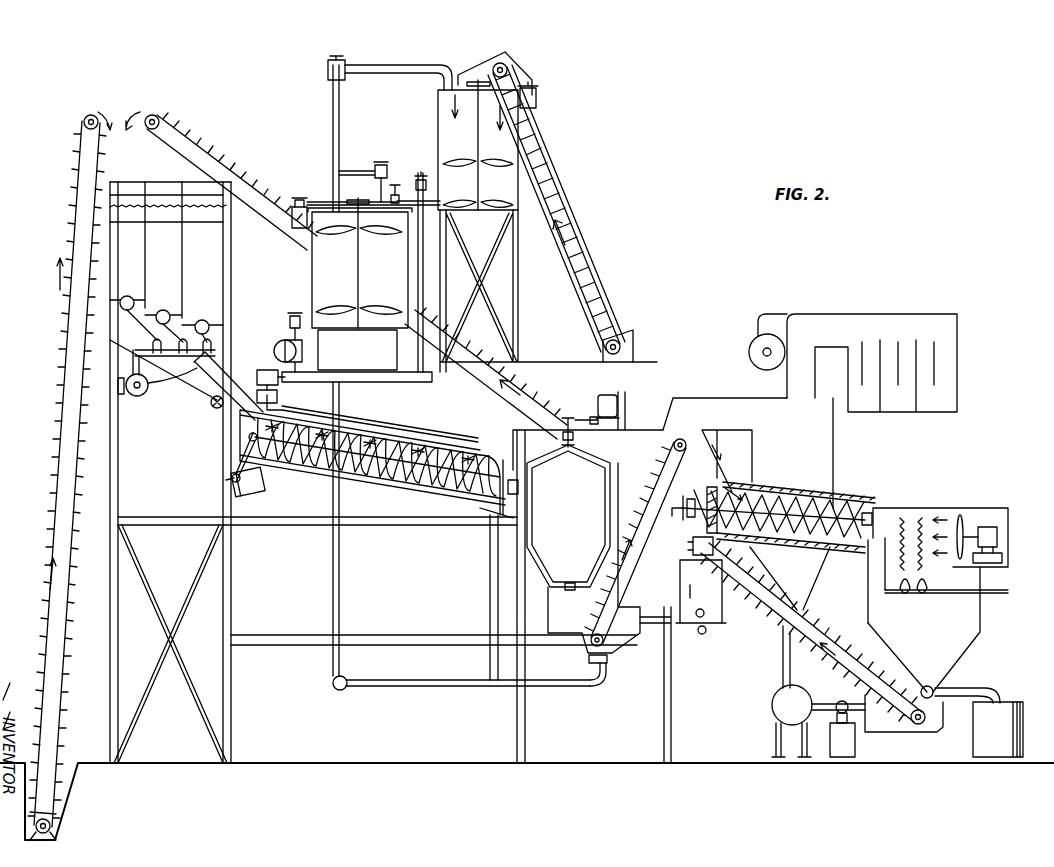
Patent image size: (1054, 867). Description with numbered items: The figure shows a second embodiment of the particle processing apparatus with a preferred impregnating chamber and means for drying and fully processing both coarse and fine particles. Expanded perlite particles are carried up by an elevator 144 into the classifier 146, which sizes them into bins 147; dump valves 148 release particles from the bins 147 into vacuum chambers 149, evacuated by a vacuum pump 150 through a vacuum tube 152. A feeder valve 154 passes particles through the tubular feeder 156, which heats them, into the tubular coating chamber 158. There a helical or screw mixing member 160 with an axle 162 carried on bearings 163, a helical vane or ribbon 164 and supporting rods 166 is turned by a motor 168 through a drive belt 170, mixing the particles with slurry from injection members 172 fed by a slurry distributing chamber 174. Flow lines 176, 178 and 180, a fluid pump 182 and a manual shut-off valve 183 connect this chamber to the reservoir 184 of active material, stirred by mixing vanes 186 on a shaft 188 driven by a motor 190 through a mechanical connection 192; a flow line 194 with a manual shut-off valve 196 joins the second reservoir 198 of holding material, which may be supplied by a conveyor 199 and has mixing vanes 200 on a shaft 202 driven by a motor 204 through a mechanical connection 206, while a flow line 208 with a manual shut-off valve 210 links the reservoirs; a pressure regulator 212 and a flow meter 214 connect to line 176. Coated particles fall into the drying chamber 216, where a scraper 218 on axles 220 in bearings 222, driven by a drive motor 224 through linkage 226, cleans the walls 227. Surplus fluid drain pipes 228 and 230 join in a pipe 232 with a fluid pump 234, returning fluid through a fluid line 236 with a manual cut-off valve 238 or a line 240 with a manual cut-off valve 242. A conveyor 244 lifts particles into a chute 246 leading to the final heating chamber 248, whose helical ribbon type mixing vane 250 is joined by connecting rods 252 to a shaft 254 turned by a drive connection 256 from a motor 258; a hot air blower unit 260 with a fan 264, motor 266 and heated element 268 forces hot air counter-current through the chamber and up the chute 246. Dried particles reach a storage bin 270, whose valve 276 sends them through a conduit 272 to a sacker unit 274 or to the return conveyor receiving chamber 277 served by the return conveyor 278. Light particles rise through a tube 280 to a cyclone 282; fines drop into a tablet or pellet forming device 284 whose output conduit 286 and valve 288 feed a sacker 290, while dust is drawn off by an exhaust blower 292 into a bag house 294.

The elevator 144 is at (55, 468).
The classifier 146 is at (126, 207).
The bins 147 is at (167, 253).
The dump valves 148 is at (200, 322).
The vacuum chambers 149 is at (115, 345).
The vacuum pump 150 is at (139, 396).
The vacuum tube 152 is at (157, 356).
The feeder valve 154 is at (232, 408).
The tubular feeder 156 is at (238, 425).
The tubular coating chamber 158 is at (280, 455).
The helical or screw mixing member 160 is at (363, 448).
The axle 162 is at (410, 450).
The bearings 163 is at (240, 445).
The helical vane or ribbon 164 is at (490, 458).
The supporting rods 166 is at (328, 468).
The motor 168 is at (255, 485).
The drive belt 170 is at (230, 476).
The injection members 172 is at (322, 428).
The slurry distributing chamber 174 is at (345, 433).
The flow line 176 is at (272, 422).
The flow line 178 is at (374, 372).
The flow line 180 is at (305, 352).
The fluid pump 182 is at (282, 340).
The manual shut-off valve 183 is at (288, 314).
The reservoir 184 is at (360, 268).
The mixing vanes 186 is at (324, 305).
The shaft 188 is at (360, 250).
The motor 190 is at (298, 205).
The mechanical connection 192 is at (313, 200).
The flow line 194 is at (445, 234).
The manual shut-off valve 196 is at (422, 172).
The second reservoir 198 is at (478, 150).
The conveyor 199 is at (565, 188).
The mixing vanes 200 is at (448, 203).
The shaft 202 is at (480, 140).
The motor 204 is at (537, 95).
The mechanical connection 206 is at (510, 68).
The flow line 208 is at (416, 178).
The manual shut-off valve 210 is at (394, 180).
The pressure regulator 212 is at (262, 370).
The flow meter 214 is at (257, 394).
The drying chamber 216 is at (583, 549).
The scraper 218 is at (596, 462).
The axles 220 is at (575, 438).
The bearings 222 is at (563, 438).
The drive motor 224 is at (608, 395).
The linkage 226 is at (588, 418).
The walls 227 is at (622, 490).
The surplus fluid drain pipe 228 is at (572, 688).
The surplus fluid drain pipe 230 is at (490, 573).
The pipe 232 is at (333, 150).
The fluid pump 234 is at (334, 690).
The fluid line 236 is at (352, 193).
The manual cut-off valve 238 is at (376, 168).
The line 240 is at (397, 73).
The manual cut-off valve 242 is at (328, 72).
The conveyor 244 is at (625, 640).
The chute 246 is at (718, 470).
The final heating chamber 248 is at (790, 490).
The helical ribbon type mixing vane 250 is at (840, 495).
The connecting rods 252 is at (767, 490).
The shaft 254 is at (872, 515).
The drive connection 256 is at (690, 517).
The motor 258 is at (700, 556).
The hot air blower unit 260 is at (945, 501).
The fan 264 is at (966, 520).
The motor 266 is at (998, 537).
The heated element 268 is at (910, 518).
The storage bin 270 is at (968, 613).
The conduit 272 is at (960, 688).
The sacker unit 274 is at (998, 705).
The valve 276 is at (926, 686).
The return conveyor receiving chamber 277 is at (948, 727).
The return conveyor 278 is at (822, 628).
The tube 280 is at (712, 412).
The cyclone 282 is at (834, 437).
The tablet or pellet forming device 284 is at (780, 695).
The output conduit 286 is at (838, 702).
The valve 288 is at (822, 727).
The sacker 290 is at (856, 744).
The exhaust blower 292 is at (760, 340).
The bag house 294 is at (958, 331).